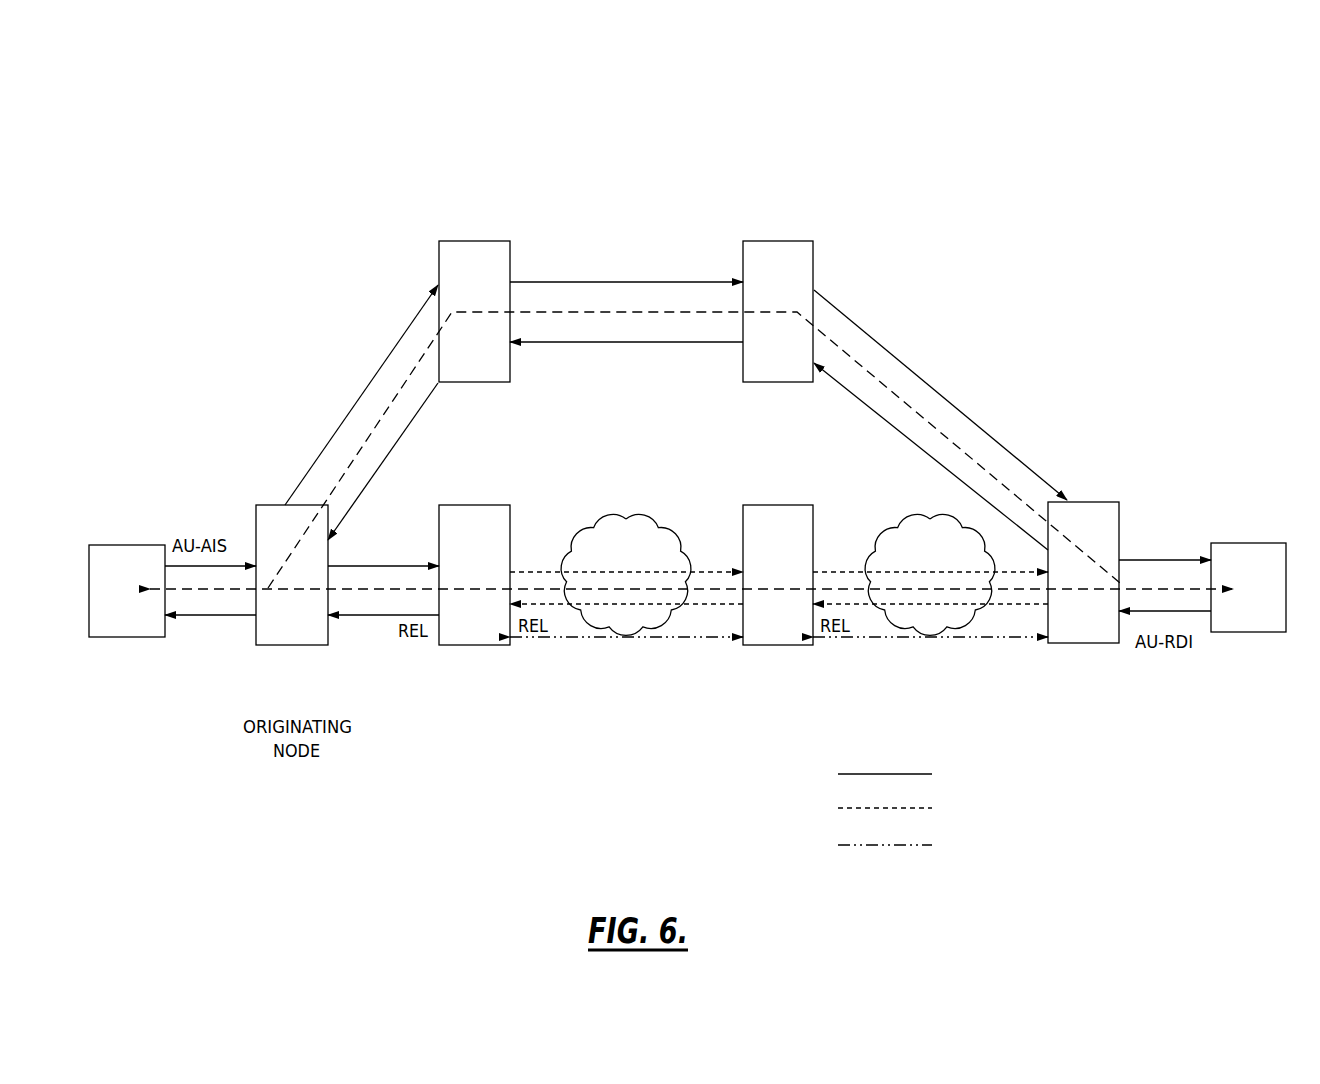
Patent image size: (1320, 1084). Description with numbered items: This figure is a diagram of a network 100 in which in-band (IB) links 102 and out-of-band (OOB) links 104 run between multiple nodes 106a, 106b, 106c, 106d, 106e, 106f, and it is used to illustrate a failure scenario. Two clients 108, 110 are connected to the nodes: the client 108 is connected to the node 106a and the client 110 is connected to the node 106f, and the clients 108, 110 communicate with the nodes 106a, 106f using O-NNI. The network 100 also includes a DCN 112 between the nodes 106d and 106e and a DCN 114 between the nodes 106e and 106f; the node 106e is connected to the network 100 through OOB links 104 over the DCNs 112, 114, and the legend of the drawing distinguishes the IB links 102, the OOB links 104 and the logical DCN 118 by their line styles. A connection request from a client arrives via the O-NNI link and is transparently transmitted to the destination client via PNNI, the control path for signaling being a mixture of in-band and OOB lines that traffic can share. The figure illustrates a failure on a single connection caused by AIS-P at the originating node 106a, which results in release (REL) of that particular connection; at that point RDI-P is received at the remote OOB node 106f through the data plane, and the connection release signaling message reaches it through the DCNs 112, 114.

The network 100 is at (650, 135).
The IB links 102 is at (907, 755).
The OOB links 104 is at (828, 820).
The logical DCN 118 is at (884, 866).
The node 106a is at (280, 646).
The node 106b is at (475, 241).
The node 106c is at (780, 241).
The node 106d is at (480, 646).
The node 106e is at (783, 646).
The node 106f is at (1095, 502).
The client 108 is at (125, 545).
The client 110 is at (1240, 543).
The DCN 112 is at (637, 513).
The DCN 114 is at (913, 512).